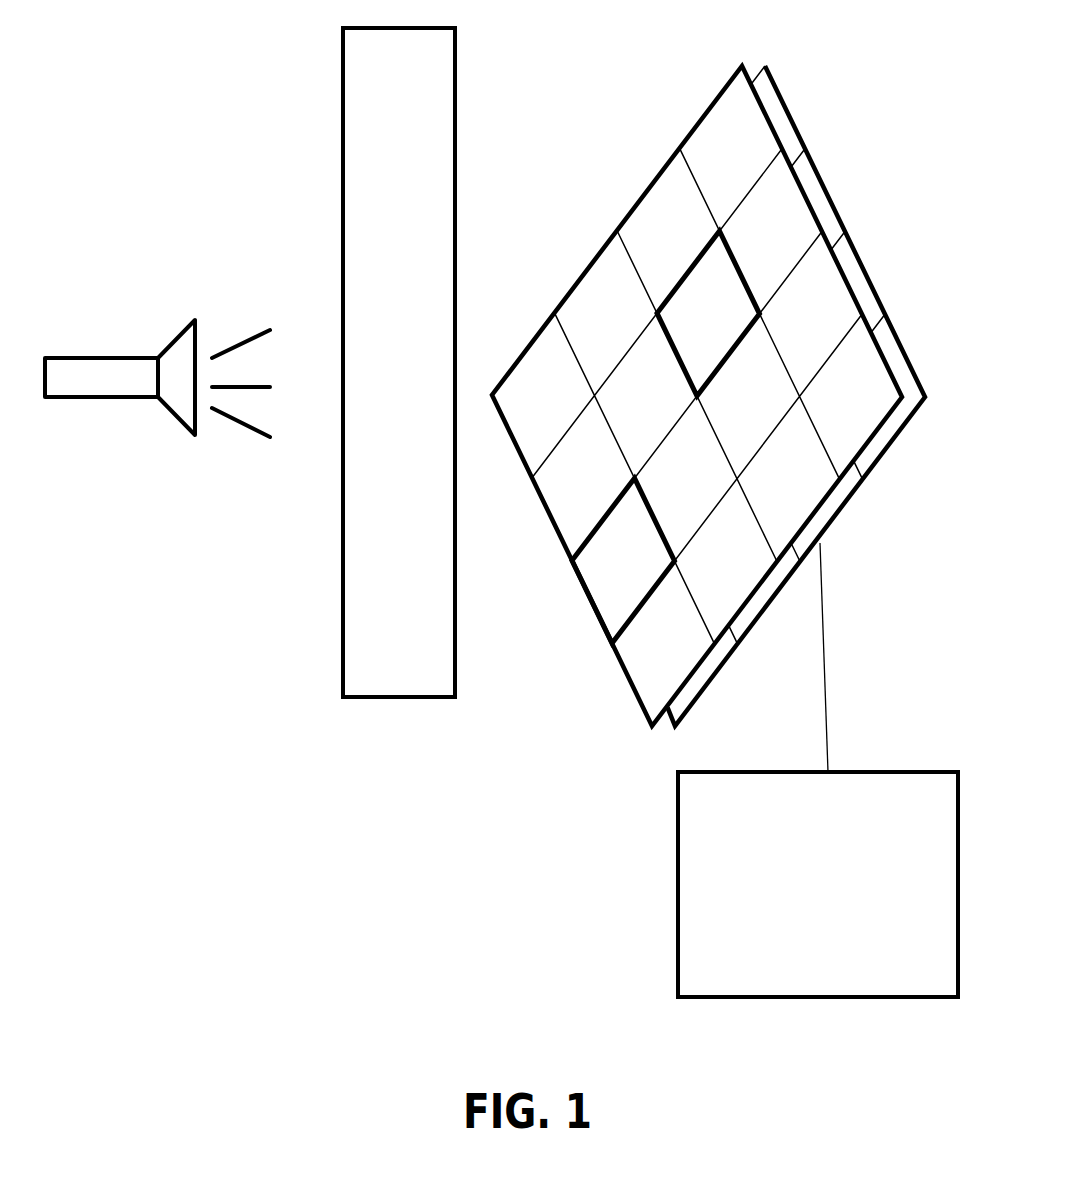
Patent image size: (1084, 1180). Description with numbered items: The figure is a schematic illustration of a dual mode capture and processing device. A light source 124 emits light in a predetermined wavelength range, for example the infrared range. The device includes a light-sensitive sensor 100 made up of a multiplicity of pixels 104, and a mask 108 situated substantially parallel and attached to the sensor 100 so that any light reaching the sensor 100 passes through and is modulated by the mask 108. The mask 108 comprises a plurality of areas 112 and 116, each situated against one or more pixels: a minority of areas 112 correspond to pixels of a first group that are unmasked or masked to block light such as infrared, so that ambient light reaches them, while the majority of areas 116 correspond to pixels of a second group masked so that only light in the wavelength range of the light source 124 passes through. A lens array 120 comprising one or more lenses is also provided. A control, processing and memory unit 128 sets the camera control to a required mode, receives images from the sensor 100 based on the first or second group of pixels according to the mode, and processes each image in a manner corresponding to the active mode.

The light-sensitive sensor 100 is at (767, 63).
The pixels 104 is at (788, 100).
The mask 108 is at (741, 65).
The areas 112 is at (690, 257).
The areas 116 is at (573, 284).
The lens array 120 is at (458, 104).
The light source 124 is at (85, 358).
The control, processing and memory unit 128 is at (889, 771).